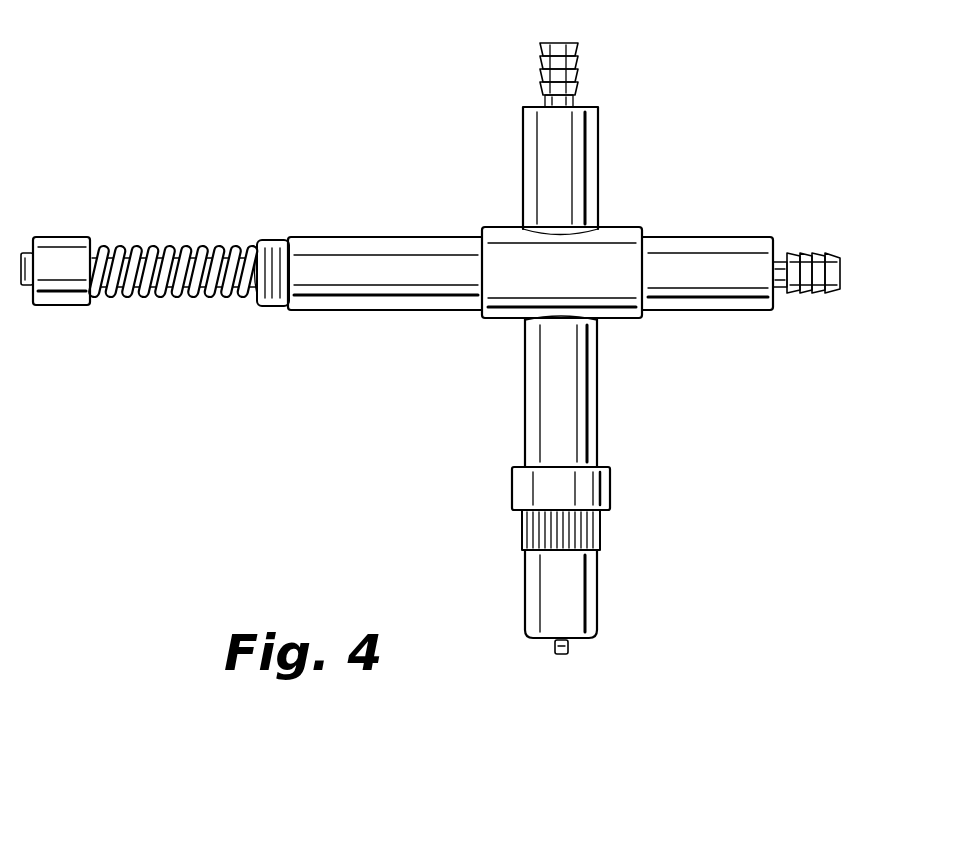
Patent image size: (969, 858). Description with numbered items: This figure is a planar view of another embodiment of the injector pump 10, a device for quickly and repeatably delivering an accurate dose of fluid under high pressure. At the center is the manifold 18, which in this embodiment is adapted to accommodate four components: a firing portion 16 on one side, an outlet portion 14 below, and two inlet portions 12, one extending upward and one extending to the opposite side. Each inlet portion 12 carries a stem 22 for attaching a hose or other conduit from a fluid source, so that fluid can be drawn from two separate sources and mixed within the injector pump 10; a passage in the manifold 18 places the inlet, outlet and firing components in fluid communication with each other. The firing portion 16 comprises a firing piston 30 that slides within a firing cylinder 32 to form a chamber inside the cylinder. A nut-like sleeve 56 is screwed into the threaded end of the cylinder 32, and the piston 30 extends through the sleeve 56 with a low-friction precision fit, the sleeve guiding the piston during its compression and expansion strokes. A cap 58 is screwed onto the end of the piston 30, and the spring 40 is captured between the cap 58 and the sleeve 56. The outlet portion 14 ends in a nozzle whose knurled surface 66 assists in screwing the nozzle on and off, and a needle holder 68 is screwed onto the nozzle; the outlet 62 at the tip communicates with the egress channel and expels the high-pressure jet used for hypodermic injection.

The injector pump 10 is at (356, 145).
The inlet portion 12 is at (614, 143).
The outlet portion 14 is at (612, 402).
The firing portion 16 is at (278, 195).
The manifold 18 is at (490, 192).
The stem 22 is at (578, 86).
The firing piston 30 is at (160, 245).
The firing cylinder 32 is at (412, 237).
The spring 40 is at (165, 297).
The nut-like sleeve 56 is at (275, 306).
The cap 58 is at (68, 306).
The outlet 62 is at (568, 648).
The knurled surface 66 is at (600, 531).
The needle holder 68 is at (597, 596).